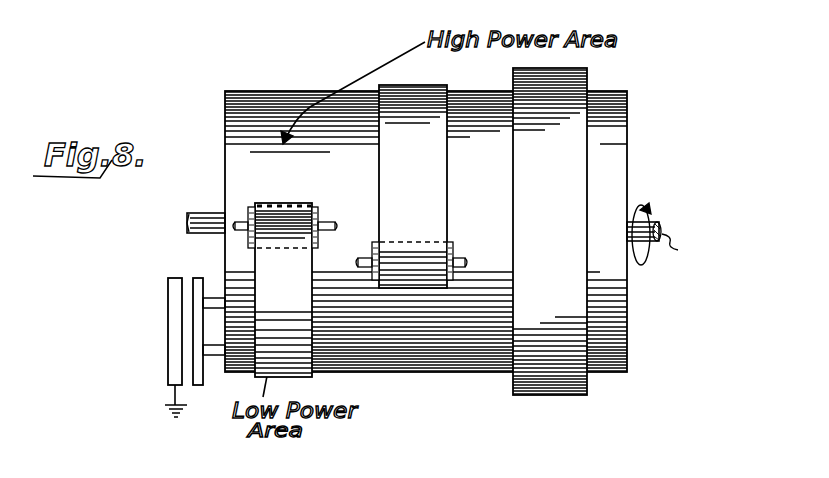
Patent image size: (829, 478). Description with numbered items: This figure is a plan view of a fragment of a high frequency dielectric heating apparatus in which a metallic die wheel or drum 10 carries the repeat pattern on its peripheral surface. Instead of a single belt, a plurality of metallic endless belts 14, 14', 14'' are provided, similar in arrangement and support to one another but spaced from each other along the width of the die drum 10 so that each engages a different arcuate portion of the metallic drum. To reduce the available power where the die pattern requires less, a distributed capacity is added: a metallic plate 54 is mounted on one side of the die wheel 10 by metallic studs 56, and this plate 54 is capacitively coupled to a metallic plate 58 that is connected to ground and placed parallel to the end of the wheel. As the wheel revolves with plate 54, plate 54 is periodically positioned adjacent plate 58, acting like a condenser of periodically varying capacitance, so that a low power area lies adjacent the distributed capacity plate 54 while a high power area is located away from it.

The die drum 10 is at (412, 337).
The metallic endless belt 14 is at (291, 290).
The metallic endless belt 14' is at (401, 186).
The metallic endless belt 14'' is at (595, 231).
The metallic plate 54 is at (195, 278).
The metallic studs 56 is at (210, 298).
The metallic plate 58 is at (168, 307).